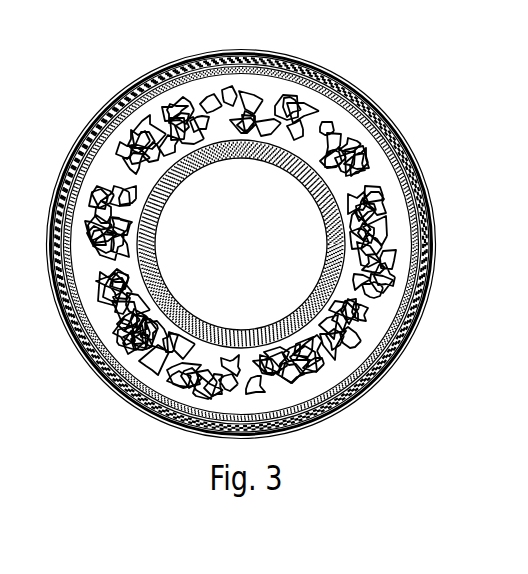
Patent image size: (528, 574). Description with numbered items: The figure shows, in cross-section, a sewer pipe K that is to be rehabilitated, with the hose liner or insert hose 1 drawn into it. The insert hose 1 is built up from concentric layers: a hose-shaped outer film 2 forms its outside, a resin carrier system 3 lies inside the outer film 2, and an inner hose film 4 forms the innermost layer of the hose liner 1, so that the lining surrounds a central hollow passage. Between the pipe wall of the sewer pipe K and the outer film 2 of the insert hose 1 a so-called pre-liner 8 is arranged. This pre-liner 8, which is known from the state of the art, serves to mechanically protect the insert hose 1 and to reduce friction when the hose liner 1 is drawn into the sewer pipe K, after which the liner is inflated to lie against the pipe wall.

The sewer pipe K is at (363, 92).
The hose liner 1 is at (368, 194).
The outer film 2 is at (133, 98).
The resin carrier system 3 is at (178, 150).
The inner hose film 4 is at (203, 337).
The pre-liner 8 is at (210, 70).